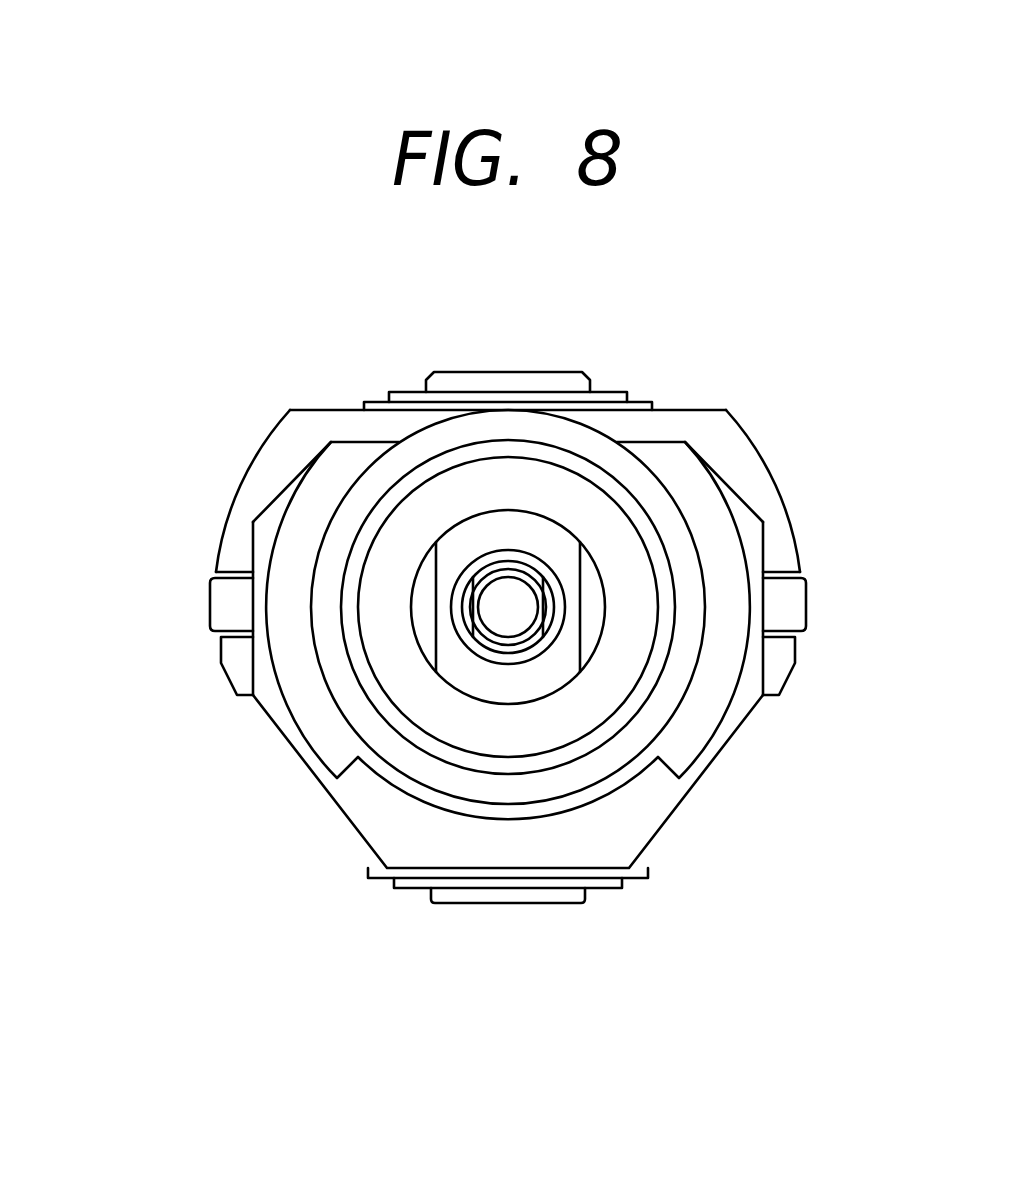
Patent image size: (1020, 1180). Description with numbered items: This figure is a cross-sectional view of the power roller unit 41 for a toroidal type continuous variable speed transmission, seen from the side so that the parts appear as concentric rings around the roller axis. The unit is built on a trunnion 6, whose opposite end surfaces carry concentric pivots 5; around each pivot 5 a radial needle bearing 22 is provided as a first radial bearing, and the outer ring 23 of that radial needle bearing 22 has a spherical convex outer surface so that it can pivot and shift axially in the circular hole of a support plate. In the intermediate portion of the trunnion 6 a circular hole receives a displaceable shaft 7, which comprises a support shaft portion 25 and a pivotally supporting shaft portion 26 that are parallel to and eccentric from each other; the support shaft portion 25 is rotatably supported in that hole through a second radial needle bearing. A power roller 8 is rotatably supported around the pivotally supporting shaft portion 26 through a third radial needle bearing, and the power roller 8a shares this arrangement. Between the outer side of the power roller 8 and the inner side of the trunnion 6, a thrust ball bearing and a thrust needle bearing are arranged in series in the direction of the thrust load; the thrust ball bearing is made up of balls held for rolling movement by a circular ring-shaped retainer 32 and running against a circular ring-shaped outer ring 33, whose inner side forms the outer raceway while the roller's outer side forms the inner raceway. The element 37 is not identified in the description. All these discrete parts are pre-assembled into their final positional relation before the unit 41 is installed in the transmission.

The power roller unit 41 is at (186, 508).
The power roller 8 is at (697, 430).
The power roller 8a is at (766, 453).
The outer ring 33 is at (238, 660).
The retainer 32 is at (786, 606).
The trunnion 6 is at (359, 803).
The support shaft portion 25 is at (551, 893).
The pivotally supporting shaft portion 26 is at (484, 388).
The displaceable shaft 7 is at (566, 388).
The outer ring 23 is at (373, 483).
The radial needle bearing 22 is at (350, 540).
The pivot 5 is at (618, 660).
The center bearing 37 is at (457, 612).